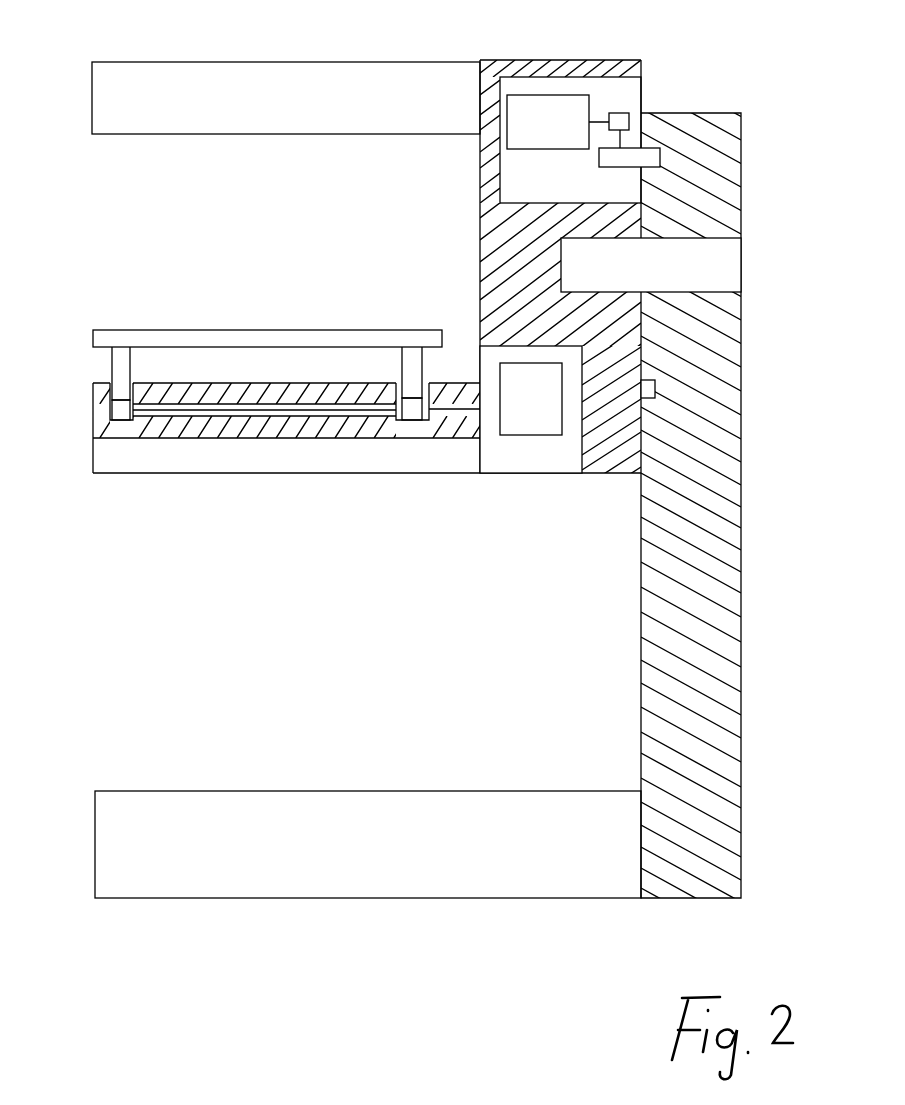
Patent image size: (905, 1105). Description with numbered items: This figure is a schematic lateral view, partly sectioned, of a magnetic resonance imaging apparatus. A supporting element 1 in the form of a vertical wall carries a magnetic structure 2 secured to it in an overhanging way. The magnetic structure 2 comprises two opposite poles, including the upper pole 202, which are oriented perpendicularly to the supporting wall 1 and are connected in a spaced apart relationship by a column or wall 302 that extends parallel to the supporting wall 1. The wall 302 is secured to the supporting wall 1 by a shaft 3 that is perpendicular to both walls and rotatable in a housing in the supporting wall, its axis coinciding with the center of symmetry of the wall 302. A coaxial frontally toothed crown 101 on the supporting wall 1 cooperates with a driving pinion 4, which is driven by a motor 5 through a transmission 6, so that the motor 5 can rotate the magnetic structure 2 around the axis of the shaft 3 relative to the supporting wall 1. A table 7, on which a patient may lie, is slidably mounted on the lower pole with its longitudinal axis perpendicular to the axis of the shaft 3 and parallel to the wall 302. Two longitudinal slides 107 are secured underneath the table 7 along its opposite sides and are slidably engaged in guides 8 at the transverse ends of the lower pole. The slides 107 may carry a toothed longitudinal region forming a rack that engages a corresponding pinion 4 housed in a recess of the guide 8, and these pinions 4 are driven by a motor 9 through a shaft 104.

The supporting element 1 is at (738, 495).
The magnetic structure 2 is at (311, 46).
The pole 202 is at (367, 69).
The shaft 3 is at (720, 270).
The column or wall 302 is at (603, 463).
The pinion 4 is at (616, 160).
The motor 5 is at (548, 103).
The transmission 6 is at (620, 120).
The frontally toothed crown 101 is at (650, 150).
The table 7 is at (240, 328).
The longitudinal slides 107 is at (131, 362).
The guide 8 is at (111, 385).
The shaft 104 is at (288, 412).
The motor 9 is at (533, 428).